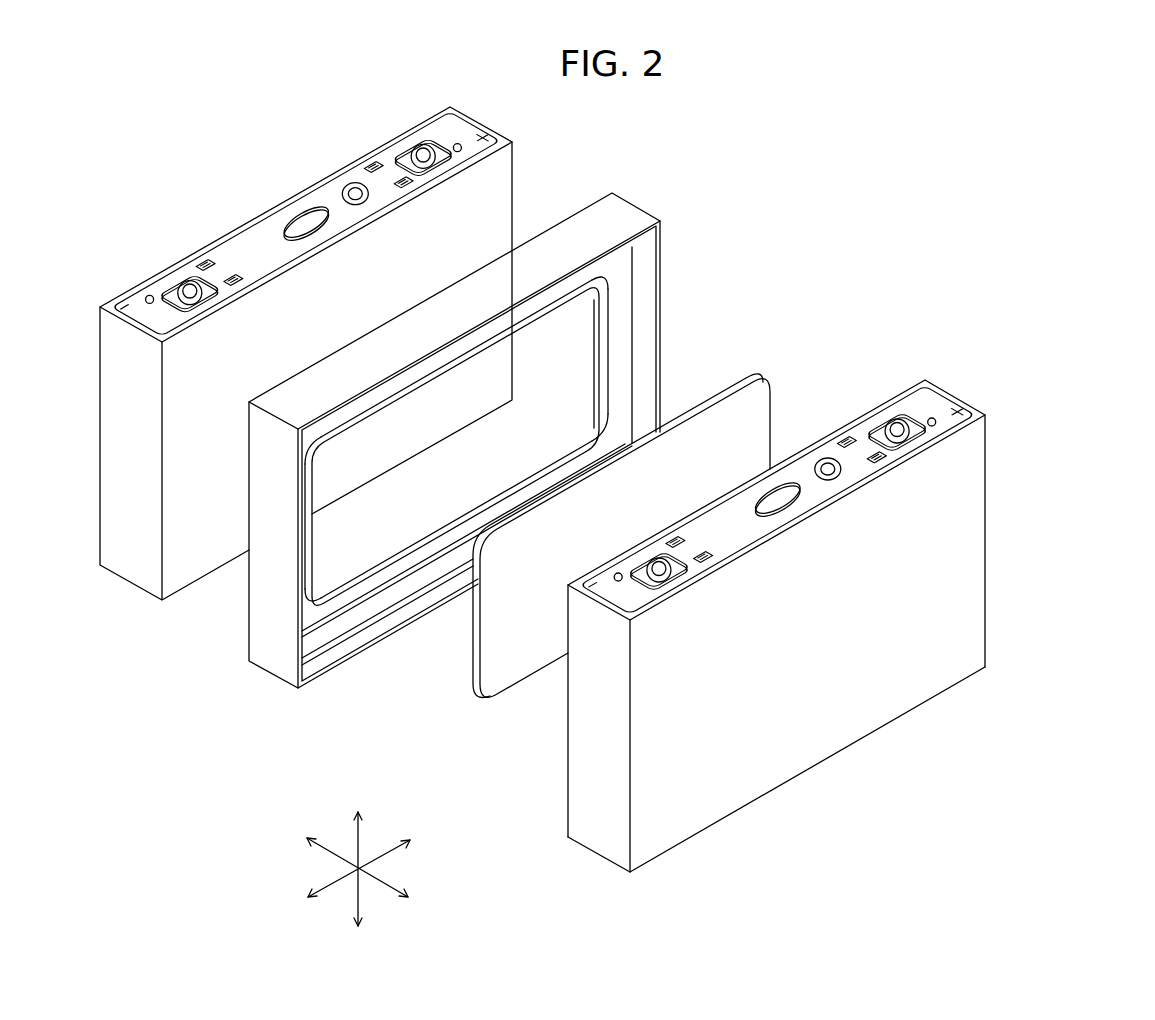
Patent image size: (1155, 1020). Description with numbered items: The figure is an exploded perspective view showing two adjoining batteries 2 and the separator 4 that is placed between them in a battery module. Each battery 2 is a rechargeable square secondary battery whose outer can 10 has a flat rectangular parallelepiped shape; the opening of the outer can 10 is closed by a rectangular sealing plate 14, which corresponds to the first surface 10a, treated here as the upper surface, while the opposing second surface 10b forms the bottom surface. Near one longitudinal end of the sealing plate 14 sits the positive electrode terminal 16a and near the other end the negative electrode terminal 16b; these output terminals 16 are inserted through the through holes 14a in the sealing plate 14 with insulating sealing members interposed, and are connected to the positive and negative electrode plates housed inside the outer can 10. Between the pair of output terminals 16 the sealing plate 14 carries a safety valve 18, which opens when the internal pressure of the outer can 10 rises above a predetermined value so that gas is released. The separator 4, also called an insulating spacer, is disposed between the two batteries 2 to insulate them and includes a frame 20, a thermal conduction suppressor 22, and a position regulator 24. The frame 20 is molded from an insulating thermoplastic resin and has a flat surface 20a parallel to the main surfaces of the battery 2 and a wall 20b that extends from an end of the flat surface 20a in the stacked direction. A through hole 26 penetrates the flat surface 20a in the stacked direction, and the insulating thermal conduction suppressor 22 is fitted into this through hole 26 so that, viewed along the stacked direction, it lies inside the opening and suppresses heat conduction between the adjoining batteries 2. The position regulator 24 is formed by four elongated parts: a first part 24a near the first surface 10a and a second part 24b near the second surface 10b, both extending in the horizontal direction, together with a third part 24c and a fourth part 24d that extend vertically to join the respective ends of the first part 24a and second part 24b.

The battery 2 is at (605, 516).
The separator 4 is at (698, 170).
The outer can 10 is at (779, 616).
The first surface 10a is at (776, 500).
The second surface 10b is at (603, 865).
The sealing plate 14 is at (835, 482).
The through hole 14a is at (847, 413).
The output terminal 16 is at (707, 533).
The positive electrode terminal 16a is at (893, 407).
The negative electrode terminal 16b is at (607, 575).
The safety valve 18 is at (781, 485).
The frame 20 is at (409, 488).
The flat surface 20a is at (317, 628).
The wall 20b is at (293, 685).
The thermal conduction suppressor 22 is at (750, 380).
The position regulator 24 is at (453, 422).
The first part 24a is at (582, 282).
The second part 24b is at (428, 555).
The third part 24c is at (325, 545).
The fourth part 24d is at (605, 390).
The through hole 26 is at (592, 347).